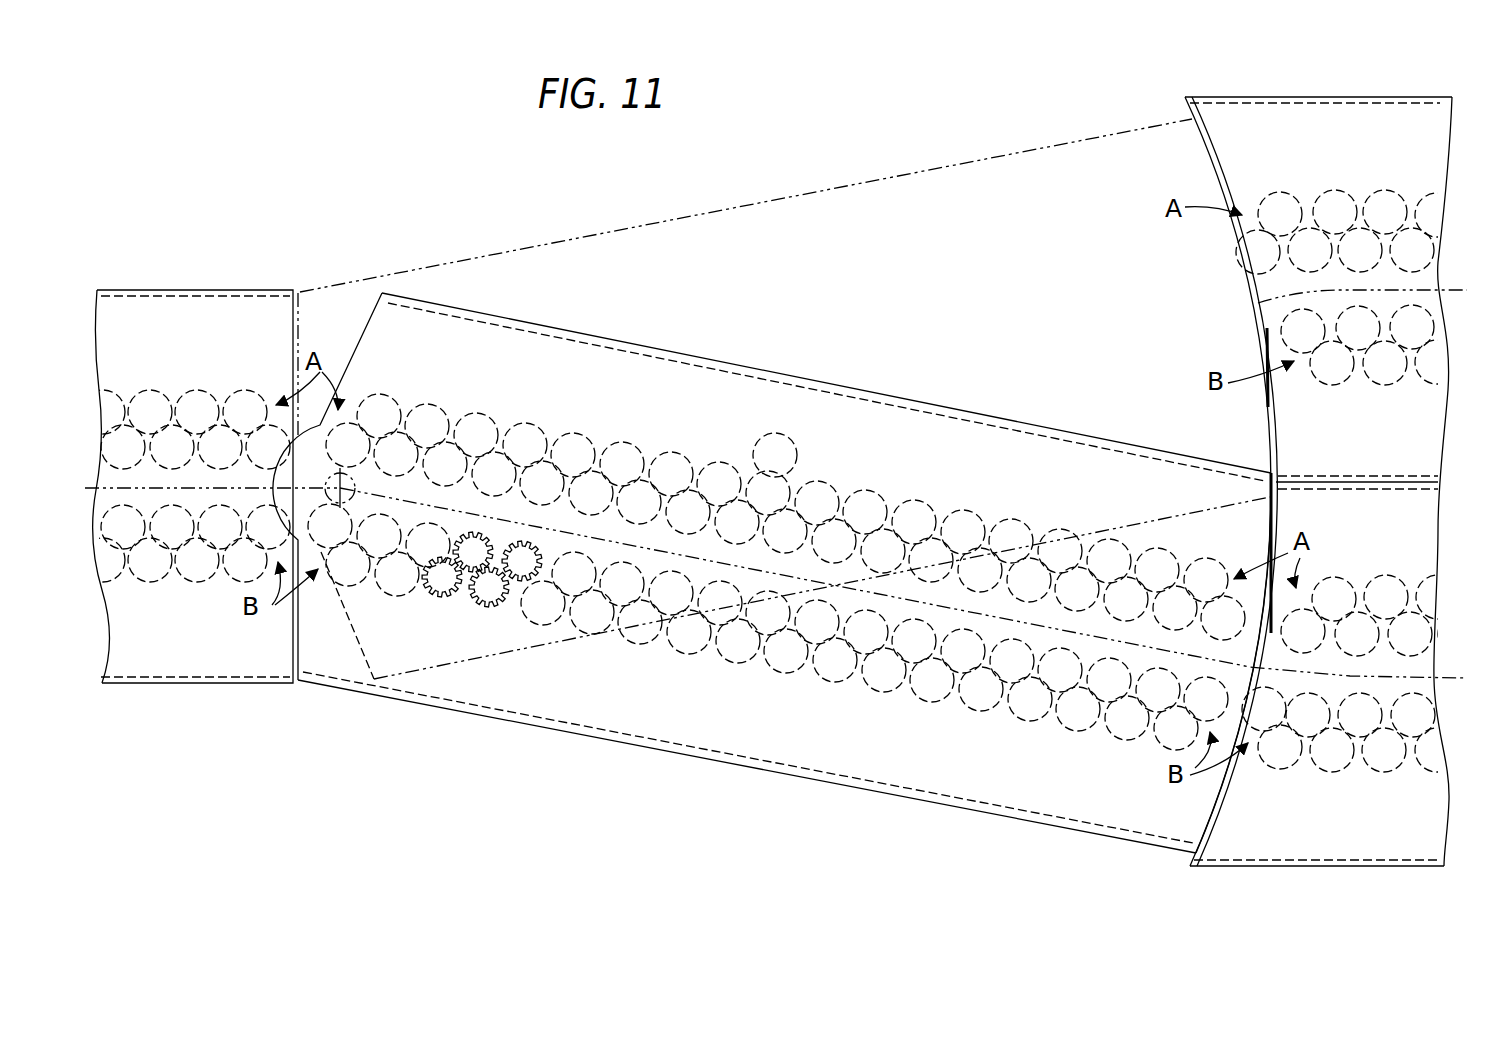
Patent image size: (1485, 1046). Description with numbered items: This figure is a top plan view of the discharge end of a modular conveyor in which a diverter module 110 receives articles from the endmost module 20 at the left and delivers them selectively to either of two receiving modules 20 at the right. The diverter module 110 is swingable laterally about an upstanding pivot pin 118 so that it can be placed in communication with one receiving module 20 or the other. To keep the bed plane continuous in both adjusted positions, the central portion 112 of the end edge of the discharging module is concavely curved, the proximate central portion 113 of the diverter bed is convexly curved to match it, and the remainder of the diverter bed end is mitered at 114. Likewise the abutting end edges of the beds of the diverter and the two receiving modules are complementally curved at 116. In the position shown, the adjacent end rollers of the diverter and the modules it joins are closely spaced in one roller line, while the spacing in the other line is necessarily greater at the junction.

The module 20 is at (178, 298).
The diverter module 110 is at (778, 198).
The central portion of the end edge of the discharging module 112 is at (280, 478).
The central portion of the bed of the diverter 113 is at (300, 530).
The mitered remainder of the diverter bed end 114 is at (368, 320).
The abutting end edges of the beds 116 is at (1222, 168).
The pivot pin 118 is at (398, 437).